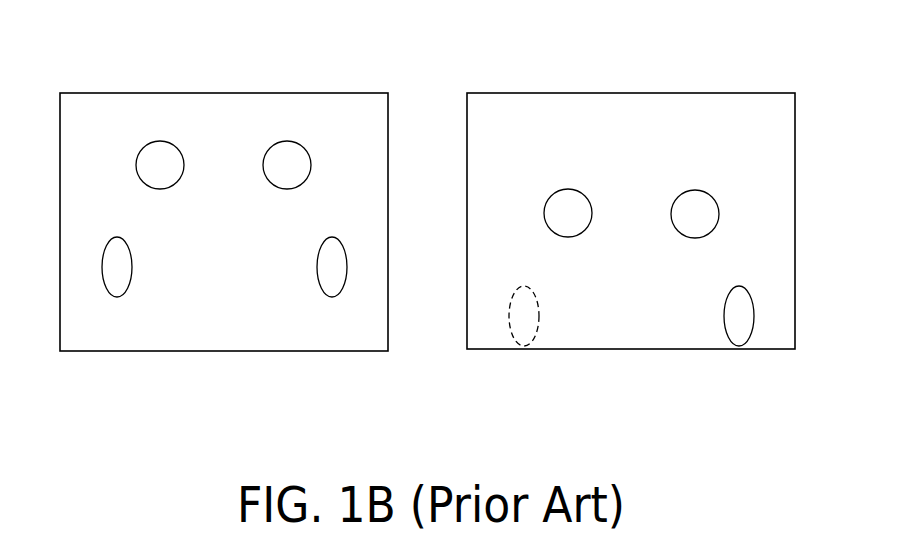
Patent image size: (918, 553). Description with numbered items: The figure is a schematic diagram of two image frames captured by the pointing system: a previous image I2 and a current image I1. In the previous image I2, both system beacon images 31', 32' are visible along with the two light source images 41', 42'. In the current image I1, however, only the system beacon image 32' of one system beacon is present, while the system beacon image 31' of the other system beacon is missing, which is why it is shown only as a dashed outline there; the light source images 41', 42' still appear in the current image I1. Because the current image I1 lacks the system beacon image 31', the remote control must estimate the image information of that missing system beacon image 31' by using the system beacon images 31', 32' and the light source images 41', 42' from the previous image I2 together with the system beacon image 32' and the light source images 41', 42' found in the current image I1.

The current image I1 is at (621, 92).
The previous image I2 is at (214, 93).
The light source image 41' is at (352, 141).
The light source image 42' is at (495, 140).
The system beacon image 31' is at (317, 326).
The system beacon image 32' is at (539, 326).